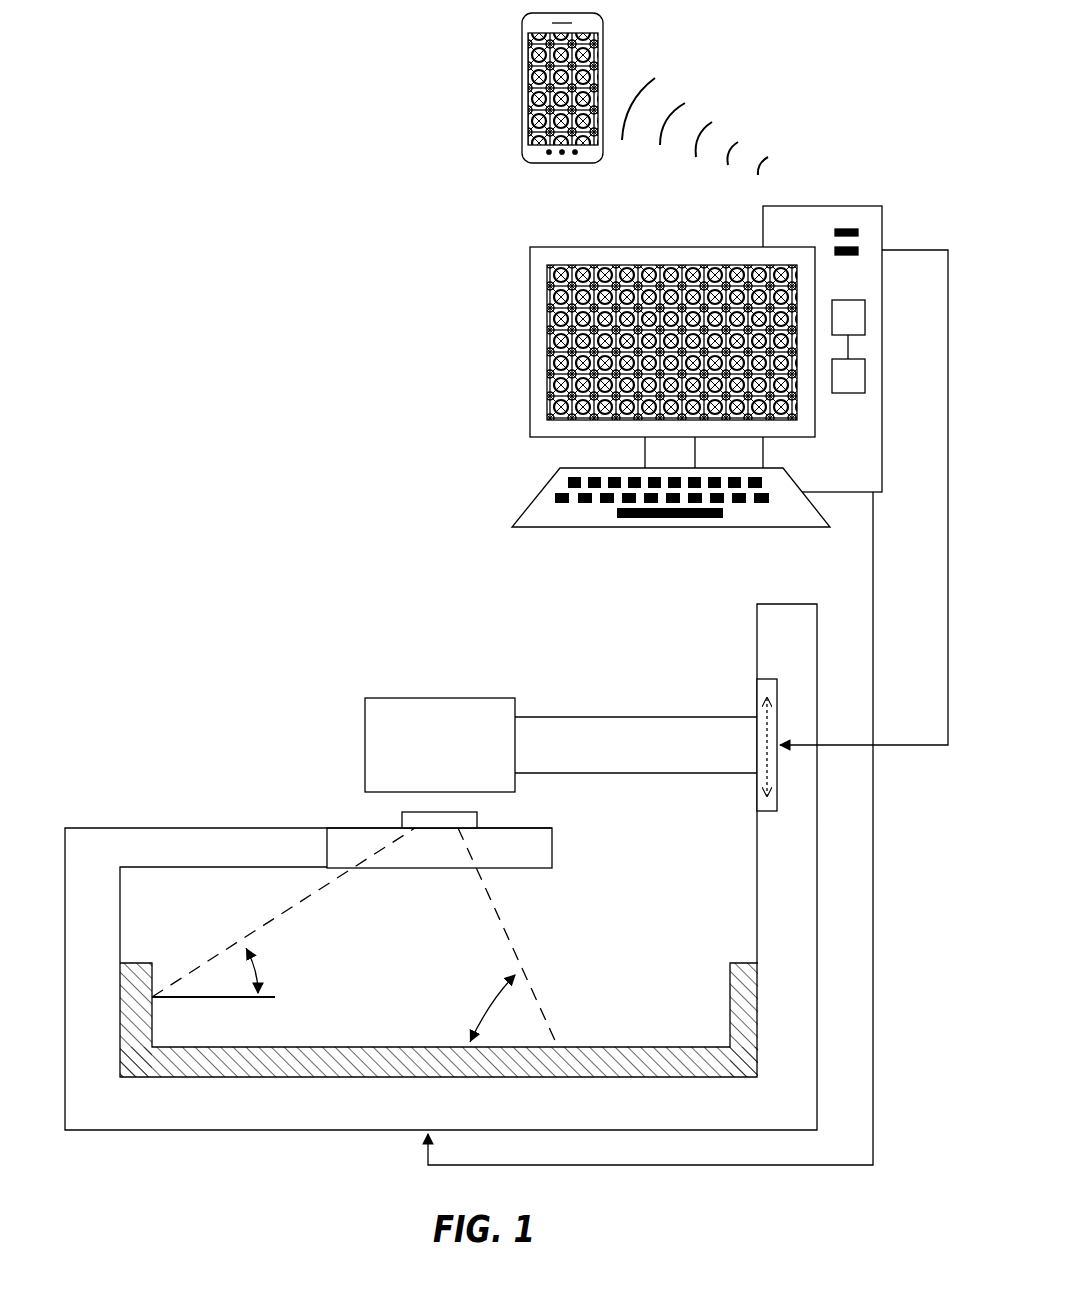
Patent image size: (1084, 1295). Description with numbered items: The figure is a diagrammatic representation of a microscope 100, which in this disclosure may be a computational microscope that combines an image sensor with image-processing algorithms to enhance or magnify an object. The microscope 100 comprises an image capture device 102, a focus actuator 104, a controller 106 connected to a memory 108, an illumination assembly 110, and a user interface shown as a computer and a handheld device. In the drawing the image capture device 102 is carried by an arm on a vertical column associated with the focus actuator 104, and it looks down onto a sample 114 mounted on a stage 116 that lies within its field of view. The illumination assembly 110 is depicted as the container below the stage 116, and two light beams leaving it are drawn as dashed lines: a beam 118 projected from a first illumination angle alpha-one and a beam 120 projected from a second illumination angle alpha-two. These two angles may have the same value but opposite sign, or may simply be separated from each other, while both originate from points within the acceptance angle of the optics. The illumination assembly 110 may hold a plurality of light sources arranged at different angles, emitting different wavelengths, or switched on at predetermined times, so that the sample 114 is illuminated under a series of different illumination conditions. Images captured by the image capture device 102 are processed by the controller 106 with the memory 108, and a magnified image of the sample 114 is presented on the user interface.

The microscope 100 is at (150, 543).
The image capture device 102 is at (385, 743).
The focus actuator 104 is at (777, 692).
The controller 106 is at (865, 327).
The memory 108 is at (865, 380).
The illumination assembly 110 is at (268, 1078).
The sample 114 is at (402, 820).
The stage 116 is at (538, 853).
The beam 118 is at (518, 960).
The beam 120 is at (260, 927).